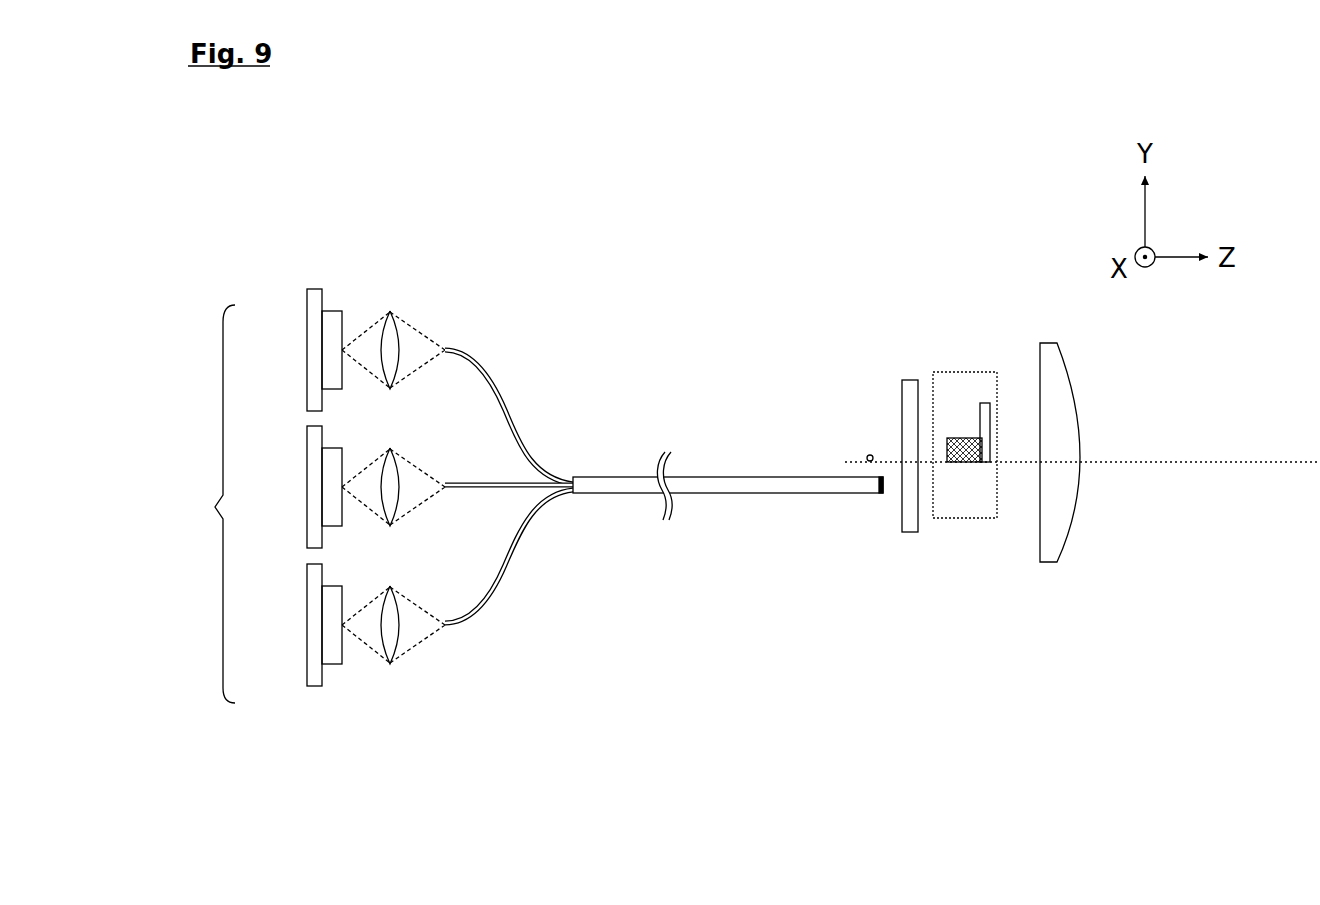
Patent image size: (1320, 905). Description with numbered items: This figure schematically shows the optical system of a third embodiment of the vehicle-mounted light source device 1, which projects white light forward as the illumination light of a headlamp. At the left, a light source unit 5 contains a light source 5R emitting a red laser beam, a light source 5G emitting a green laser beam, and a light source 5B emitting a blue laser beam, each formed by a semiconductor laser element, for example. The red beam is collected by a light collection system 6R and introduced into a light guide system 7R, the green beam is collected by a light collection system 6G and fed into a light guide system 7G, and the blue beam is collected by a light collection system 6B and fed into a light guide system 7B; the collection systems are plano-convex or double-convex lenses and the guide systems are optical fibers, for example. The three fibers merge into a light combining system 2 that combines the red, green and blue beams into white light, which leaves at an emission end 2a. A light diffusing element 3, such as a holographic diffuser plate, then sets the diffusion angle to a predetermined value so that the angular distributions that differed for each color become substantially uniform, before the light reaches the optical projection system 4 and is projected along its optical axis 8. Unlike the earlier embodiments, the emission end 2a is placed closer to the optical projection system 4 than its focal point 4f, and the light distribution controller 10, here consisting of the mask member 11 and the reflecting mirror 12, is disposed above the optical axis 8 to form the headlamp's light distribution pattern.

The vehicle-mounted light source device 1 is at (1248, 691).
The light combining system 2 is at (622, 495).
The emission end 2a is at (880, 499).
The light diffusing element 3 is at (907, 522).
The optical projection system 4 is at (1053, 552).
The focal point 4f is at (870, 455).
The light source unit 5 is at (318, 496).
The light source 5R is at (307, 333).
The light source 5G is at (307, 470).
The light source 5B is at (307, 608).
The light collection system 6R is at (395, 370).
The light collection system 6G is at (395, 507).
The light collection system 6B is at (395, 645).
The light guide system 7R is at (490, 373).
The light guide system 7G is at (468, 480).
The light guide system 7B is at (487, 593).
The optical axis 8 is at (1262, 462).
The light distribution controller 10 is at (950, 370).
The mask member 11 is at (983, 402).
The reflecting mirror 12 is at (957, 463).